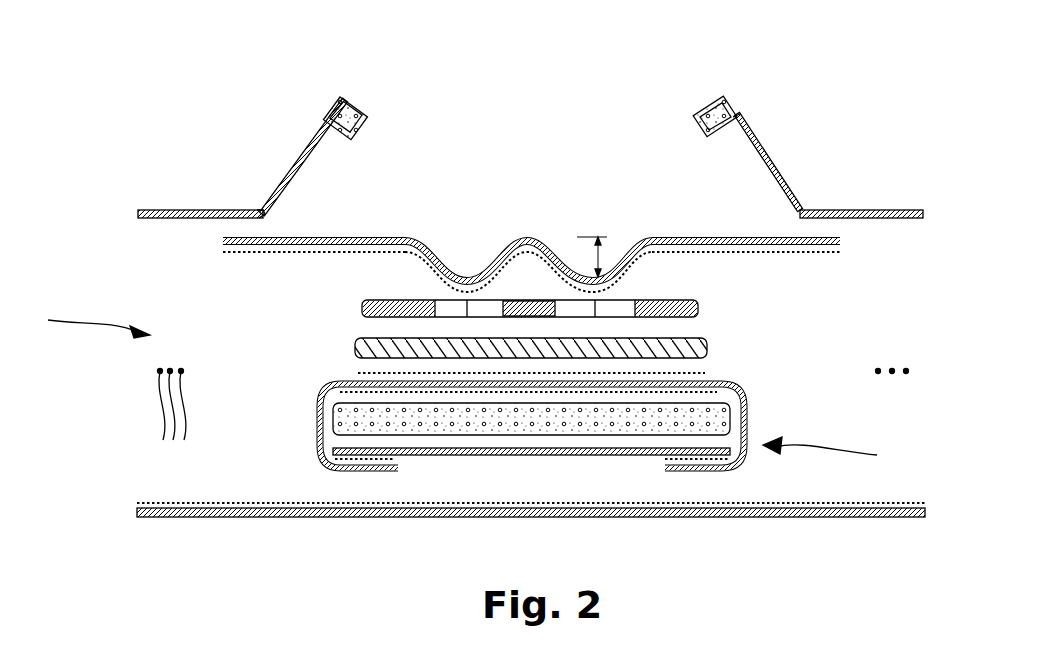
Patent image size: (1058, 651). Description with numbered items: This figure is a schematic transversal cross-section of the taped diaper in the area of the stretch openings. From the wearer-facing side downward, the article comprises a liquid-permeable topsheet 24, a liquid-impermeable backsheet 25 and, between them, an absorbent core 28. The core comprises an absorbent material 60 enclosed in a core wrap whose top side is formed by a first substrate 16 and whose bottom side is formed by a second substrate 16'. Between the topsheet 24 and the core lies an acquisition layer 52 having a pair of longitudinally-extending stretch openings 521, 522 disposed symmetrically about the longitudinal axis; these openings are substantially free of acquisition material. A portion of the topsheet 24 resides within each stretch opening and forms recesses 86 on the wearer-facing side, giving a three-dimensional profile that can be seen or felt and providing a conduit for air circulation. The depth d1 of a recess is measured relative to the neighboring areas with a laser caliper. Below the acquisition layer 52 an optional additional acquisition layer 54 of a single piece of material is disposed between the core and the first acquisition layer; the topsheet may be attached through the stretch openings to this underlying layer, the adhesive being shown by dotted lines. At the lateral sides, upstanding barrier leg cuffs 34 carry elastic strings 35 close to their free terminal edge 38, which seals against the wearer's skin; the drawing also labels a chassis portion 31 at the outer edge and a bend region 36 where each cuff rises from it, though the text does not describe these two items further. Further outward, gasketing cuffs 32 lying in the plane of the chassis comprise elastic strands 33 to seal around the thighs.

The first substrate 16 is at (575, 425).
The second substrate 16' is at (562, 477).
The topsheet 24 is at (581, 207).
The backsheet 25 is at (765, 517).
The absorbent core 28 is at (837, 454).
The carrier plate 31 is at (158, 210).
The gasketing cuffs 32 is at (83, 322).
The elastic strands 33 is at (176, 423).
The barrier leg cuffs 34 is at (312, 133).
The elastic strings 35 is at (736, 117).
The bend 36 is at (258, 211).
The free terminal edge 38 is at (348, 95).
The acquisition layer 52 is at (539, 301).
The stretch opening 521 is at (430, 300).
The stretch opening 522 is at (620, 300).
The additional acquisition layer 54 is at (707, 348).
The absorbent material 60 is at (362, 415).
The recesses 86 is at (467, 270).
The depth d1 is at (603, 255).